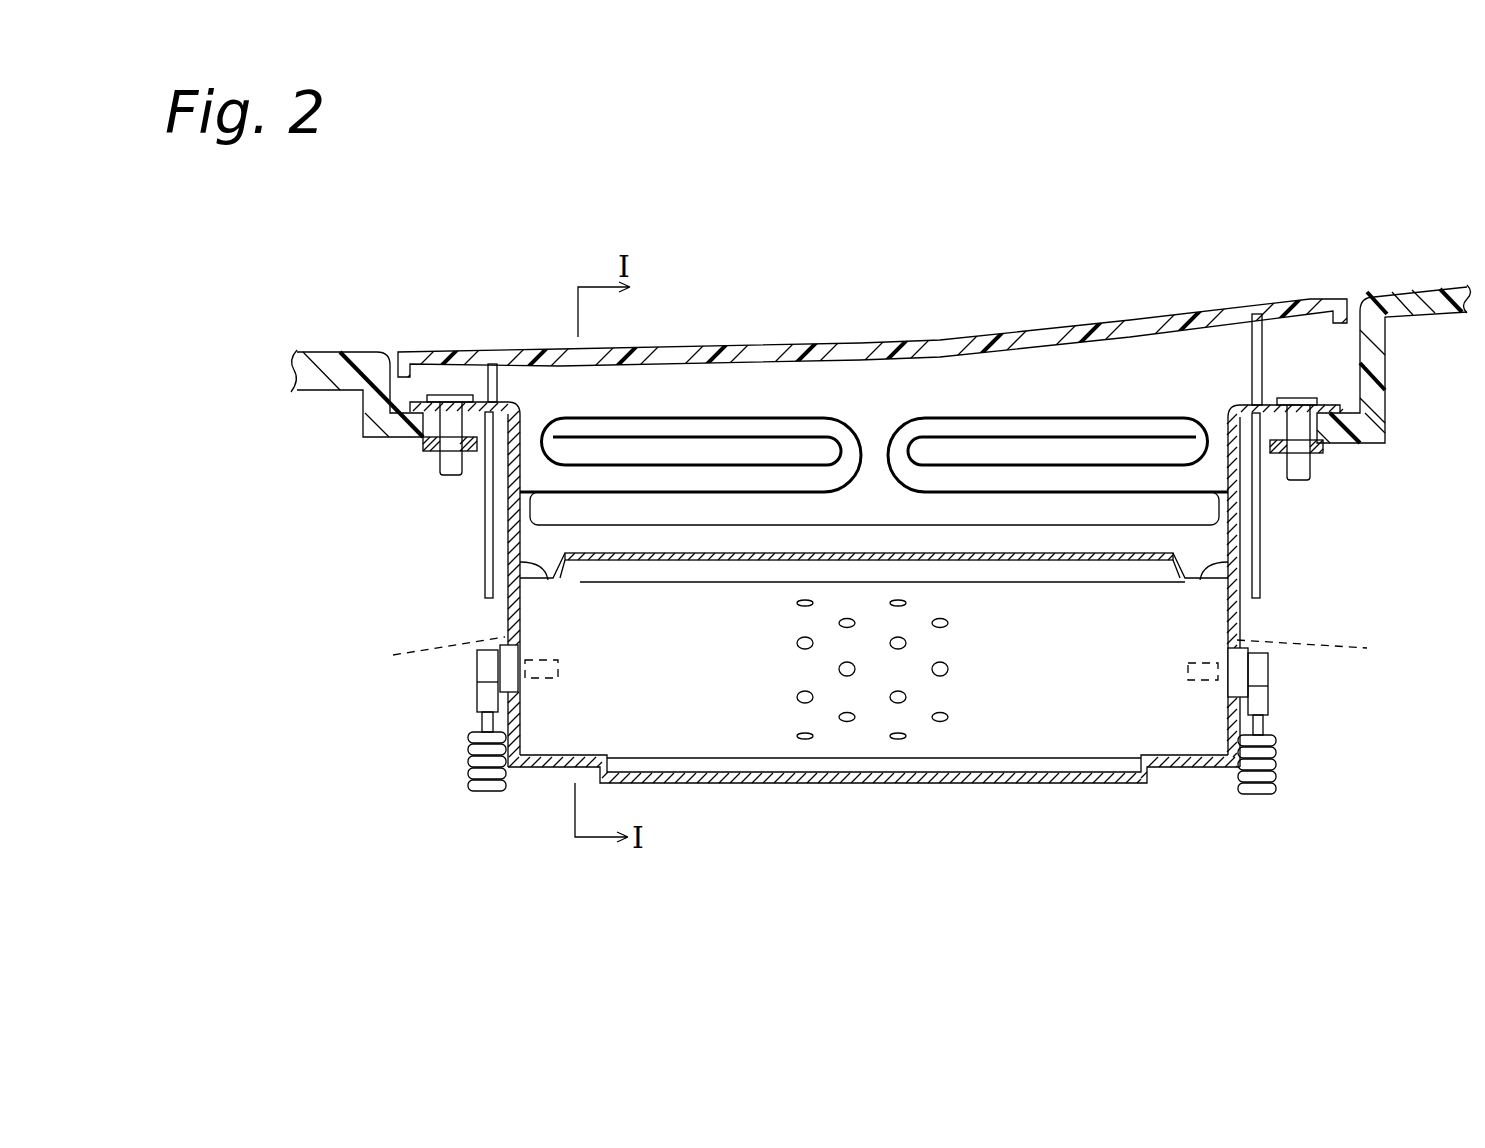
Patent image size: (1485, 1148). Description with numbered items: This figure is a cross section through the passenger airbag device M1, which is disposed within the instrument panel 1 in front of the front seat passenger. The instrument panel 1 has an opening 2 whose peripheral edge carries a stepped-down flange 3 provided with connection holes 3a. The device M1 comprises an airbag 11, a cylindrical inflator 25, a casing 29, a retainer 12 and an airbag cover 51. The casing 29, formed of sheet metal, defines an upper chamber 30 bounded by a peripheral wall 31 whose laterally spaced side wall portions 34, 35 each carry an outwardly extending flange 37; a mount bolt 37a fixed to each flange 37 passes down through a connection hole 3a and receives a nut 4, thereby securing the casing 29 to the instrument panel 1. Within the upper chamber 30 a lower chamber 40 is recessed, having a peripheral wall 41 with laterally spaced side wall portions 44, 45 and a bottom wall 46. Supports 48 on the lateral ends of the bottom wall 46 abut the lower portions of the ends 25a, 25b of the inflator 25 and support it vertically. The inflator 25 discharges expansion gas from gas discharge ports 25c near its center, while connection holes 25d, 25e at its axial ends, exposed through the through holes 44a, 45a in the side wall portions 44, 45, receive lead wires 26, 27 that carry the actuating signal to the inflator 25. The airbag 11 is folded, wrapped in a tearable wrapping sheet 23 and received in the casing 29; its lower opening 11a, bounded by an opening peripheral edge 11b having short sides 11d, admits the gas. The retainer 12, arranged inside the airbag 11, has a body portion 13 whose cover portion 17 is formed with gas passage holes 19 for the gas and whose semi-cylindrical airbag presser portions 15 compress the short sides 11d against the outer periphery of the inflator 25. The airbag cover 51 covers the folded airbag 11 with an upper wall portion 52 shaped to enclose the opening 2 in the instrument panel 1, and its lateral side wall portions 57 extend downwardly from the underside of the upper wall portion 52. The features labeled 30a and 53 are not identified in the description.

The instrument panel 1 is at (338, 368).
The opening 2 is at (1247, 420).
The flange 3 is at (388, 420).
The connection hole 3a is at (437, 468).
The nut 4 is at (423, 442).
The airbag 11 is at (874, 355).
The opening 11a is at (594, 578).
The opening peripheral edge 11b is at (874, 619).
The short sides 11d is at (537, 582).
The retainer 12 is at (874, 416).
The body portion 13 is at (728, 540).
The airbag presser portions 15 is at (513, 557).
The cover portion 17 is at (869, 426).
The gas passage holes 19 is at (878, 550).
The wrapping sheet 23 is at (862, 437).
The inflator 25 is at (875, 662).
The end of inflator 25a is at (528, 742).
The end of inflator 25b is at (1167, 745).
The gas discharge ports 25c is at (898, 740).
The connection hole 25d is at (447, 657).
The connection hole 25e is at (1307, 656).
The lead wire 26 is at (485, 727).
The lead wire 27 is at (1262, 728).
The casing 29 is at (983, 806).
The upper chamber 30 is at (1234, 386).
The flange edge 30a is at (1240, 483).
The peripheral wall 31 is at (875, 590).
The side wall portion 34 is at (875, 590).
The side wall portion 35 is at (510, 523).
The flange 37 is at (417, 400).
The mount bolt 37a is at (445, 395).
The lower chamber 40 is at (928, 768).
The peripheral wall 41 is at (870, 612).
The side wall portion 44 is at (870, 612).
The side wall portion 45 is at (510, 608).
The through hole 44a is at (500, 675).
The through hole 45a is at (1268, 672).
The bottom wall 46 is at (1090, 787).
The supports 48 is at (548, 768).
The airbag cover 51 is at (872, 285).
The upper wall portion 52 is at (872, 287).
The top plate 53 is at (783, 353).
The side wall portions 57 is at (488, 492).
The passenger airbag device M1 is at (428, 784).